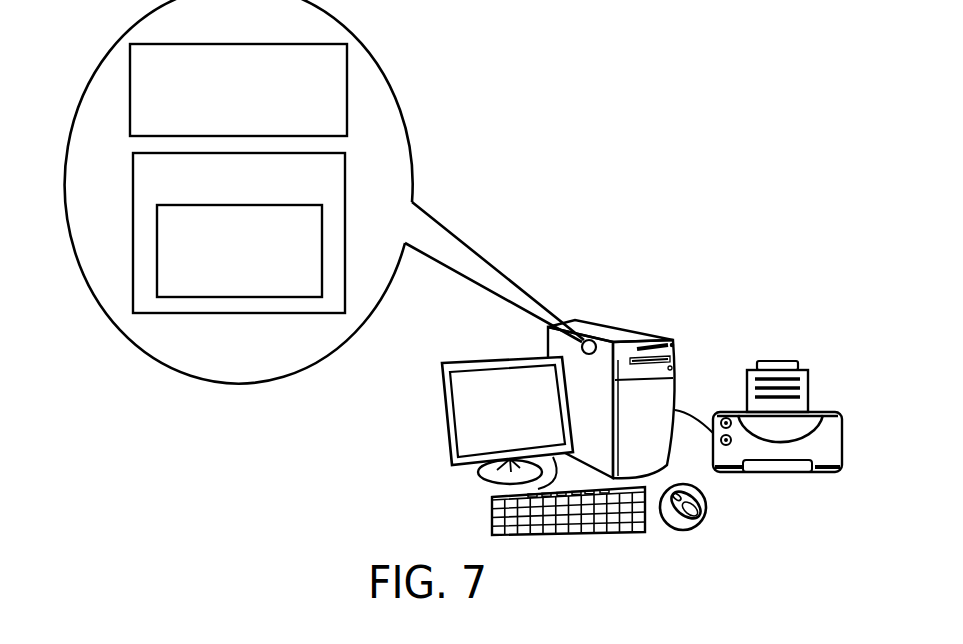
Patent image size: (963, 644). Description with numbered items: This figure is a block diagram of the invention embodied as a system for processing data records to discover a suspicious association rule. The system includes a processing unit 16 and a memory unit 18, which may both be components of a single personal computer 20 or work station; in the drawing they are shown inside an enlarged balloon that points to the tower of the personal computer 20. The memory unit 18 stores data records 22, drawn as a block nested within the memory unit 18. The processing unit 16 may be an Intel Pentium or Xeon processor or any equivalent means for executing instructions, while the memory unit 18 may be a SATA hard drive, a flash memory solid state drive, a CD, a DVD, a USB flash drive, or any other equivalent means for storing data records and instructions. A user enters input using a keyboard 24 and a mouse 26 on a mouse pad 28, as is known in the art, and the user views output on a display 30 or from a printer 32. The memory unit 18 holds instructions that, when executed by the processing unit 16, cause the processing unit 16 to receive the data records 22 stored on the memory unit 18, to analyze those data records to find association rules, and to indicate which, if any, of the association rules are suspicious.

The processing unit 16 is at (348, 87).
The memory unit 18 is at (133, 303).
The personal computer 20 is at (628, 330).
The data records 22 is at (157, 253).
The keyboard 24 is at (597, 532).
The mouse 26 is at (677, 529).
The mouse pad 28 is at (706, 519).
The display 30 is at (450, 433).
The printer 32 is at (775, 358).